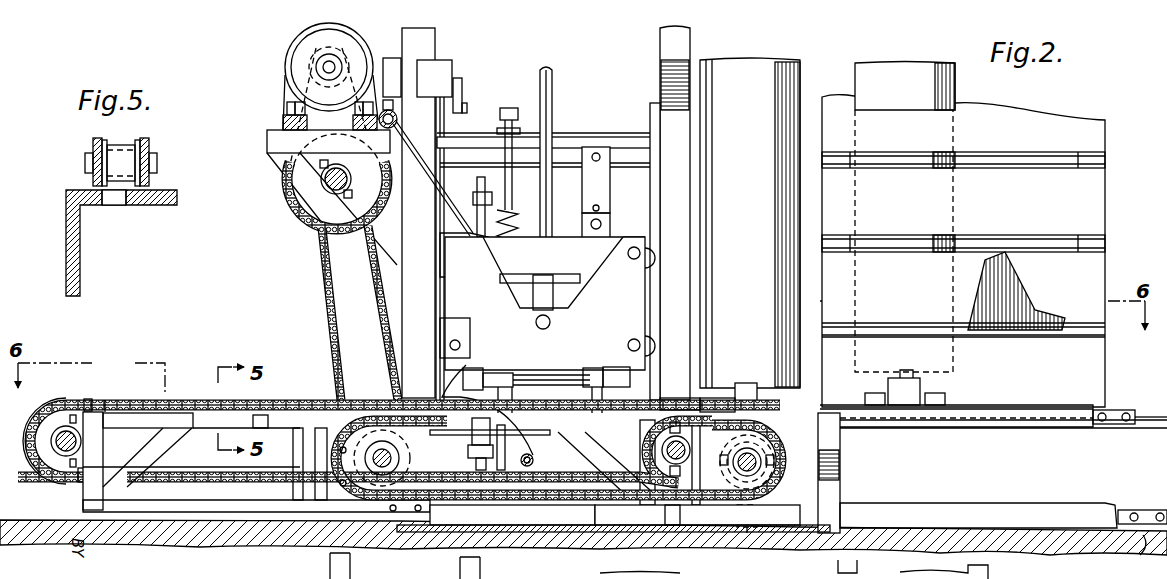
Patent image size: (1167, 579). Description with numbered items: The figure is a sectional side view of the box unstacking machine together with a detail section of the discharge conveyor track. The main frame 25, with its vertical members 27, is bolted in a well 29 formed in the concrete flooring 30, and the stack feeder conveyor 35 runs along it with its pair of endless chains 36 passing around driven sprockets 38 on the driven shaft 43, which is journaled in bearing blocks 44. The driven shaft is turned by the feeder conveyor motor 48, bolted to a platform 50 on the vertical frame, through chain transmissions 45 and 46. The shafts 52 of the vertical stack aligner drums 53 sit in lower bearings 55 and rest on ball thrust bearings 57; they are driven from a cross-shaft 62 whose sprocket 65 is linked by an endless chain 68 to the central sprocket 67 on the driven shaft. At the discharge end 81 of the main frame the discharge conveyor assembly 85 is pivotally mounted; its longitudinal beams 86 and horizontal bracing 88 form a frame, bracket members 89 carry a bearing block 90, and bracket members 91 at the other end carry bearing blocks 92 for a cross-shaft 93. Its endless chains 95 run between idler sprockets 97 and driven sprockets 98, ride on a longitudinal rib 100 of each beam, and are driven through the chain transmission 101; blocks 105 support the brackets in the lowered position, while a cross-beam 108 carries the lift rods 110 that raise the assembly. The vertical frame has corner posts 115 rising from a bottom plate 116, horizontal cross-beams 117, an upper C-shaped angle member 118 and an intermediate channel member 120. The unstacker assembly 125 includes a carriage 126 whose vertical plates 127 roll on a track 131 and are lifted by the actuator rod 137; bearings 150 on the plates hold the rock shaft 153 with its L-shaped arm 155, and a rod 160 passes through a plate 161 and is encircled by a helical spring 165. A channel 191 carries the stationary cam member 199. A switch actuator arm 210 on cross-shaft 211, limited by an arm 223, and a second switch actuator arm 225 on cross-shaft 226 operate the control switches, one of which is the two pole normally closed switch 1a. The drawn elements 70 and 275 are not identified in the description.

In FIG. 2, the two pole normally closed switch 1a is at (452, 67).
In FIG. 2, the main frame 25 is at (1017, 407).
In FIG. 2, the vertical members 27 is at (833, 442).
In FIG. 2, the well 29 is at (1145, 556).
In FIG. 2, the concrete flooring 30 is at (178, 536).
In FIG. 2, the stack feeder conveyor 35 is at (1118, 407).
In FIG. 2, the endless chains 36 is at (1143, 514).
In FIG. 2, the driven sprockets 38 is at (368, 408).
In FIG. 2, the driven shaft 43 is at (315, 462).
In FIG. 2, the bearing blocks 44 is at (293, 447).
In FIG. 2, the chain transmission 45 is at (322, 312).
In FIG. 2, the chain transmission 46 is at (290, 190).
In FIG. 2, the feeder conveyor motor 48 is at (300, 48).
In FIG. 2, the platform 50 is at (267, 142).
In FIG. 2, the shafts 52 is at (700, 43).
In FIG. 2, the vertical stack aligner drums 53 is at (750, 223).
In FIG. 2, the lower bearings 55 is at (733, 403).
In FIG. 2, the ball thrust bearing 57 is at (747, 533).
In FIG. 2, the cross-shaft 62 is at (770, 460).
In FIG. 2, the sprocket 65 is at (777, 447).
In FIG. 2, the central sprocket 67 is at (470, 458).
In FIG. 2, the endless chain 68 is at (676, 500).
In FIG. 2, the pallet 70 is at (905, 86).
In FIG. 2, the discharge end 81 is at (114, 394).
In FIG. 2, the discharge conveyor assembly 85 is at (205, 400).
In FIG. 5, the longitudinal beams 86 is at (172, 189).
In FIG. 2, the horizontal bracing 88 is at (268, 421).
In FIG. 2, the bracket members 89 is at (138, 413).
In FIG. 2, the bearing block 90 is at (79, 481).
In FIG. 2, the bracket members 91 is at (533, 455).
In FIG. 2, the bearing blocks 92 is at (665, 455).
In FIG. 2, the cross-shaft 93 is at (667, 402).
In FIG. 5, the endless chains 95 is at (128, 152).
In FIG. 2, the endless chains 95 is at (90, 400).
In FIG. 2, the idler sprockets 97 is at (677, 430).
In FIG. 2, the driven sprockets 98 is at (64, 420).
In FIG. 5, the longitudinal rib 100 is at (118, 205).
In FIG. 2, the chain transmission 101 is at (33, 402).
In FIG. 2, the blocks 105 is at (628, 514).
In FIG. 2, the cross-beam 108 is at (468, 452).
In FIG. 2, the lift rods 110 is at (492, 185).
In FIG. 2, the vertical corner posts 115 is at (435, 40).
In FIG. 2, the bottom plate 116 is at (527, 526).
In FIG. 2, the horizontal cross-beams 117 is at (512, 515).
In FIG. 2, the upper C-shaped angle member 118 is at (630, 148).
In FIG. 2, the intermediate C-shaped channel member 120 is at (560, 288).
In FIG. 2, the unstacker assembly 125 is at (467, 212).
In FIG. 2, the carriage 126 is at (623, 233).
In FIG. 2, the vertical plates 127 is at (547, 303).
In FIG. 2, the track 131 is at (650, 110).
In FIG. 2, the actuator rod 137 is at (547, 87).
In FIG. 2, the bearings 150 is at (617, 370).
In FIG. 2, the rock shaft 153 is at (537, 373).
In FIG. 2, the L-shaped arm 155 is at (560, 312).
In FIG. 2, the rod 160 is at (508, 108).
In FIG. 2, the plate 161 is at (497, 130).
In FIG. 2, the helical spring 165 is at (512, 280).
In FIG. 2, the channel 191 is at (592, 182).
In FIG. 2, the stationary cam member 199 is at (590, 233).
In FIG. 2, the switch actuator arm 210 is at (436, 213).
In FIG. 2, the cross-shaft 211 is at (398, 113).
In FIG. 2, the arm 223 is at (331, 106).
In FIG. 2, the switch actuator arm 225 is at (487, 401).
In FIG. 2, the cross-shaft 226 is at (535, 463).
In FIG. 2, the stack of pallets 275 is at (1087, 118).